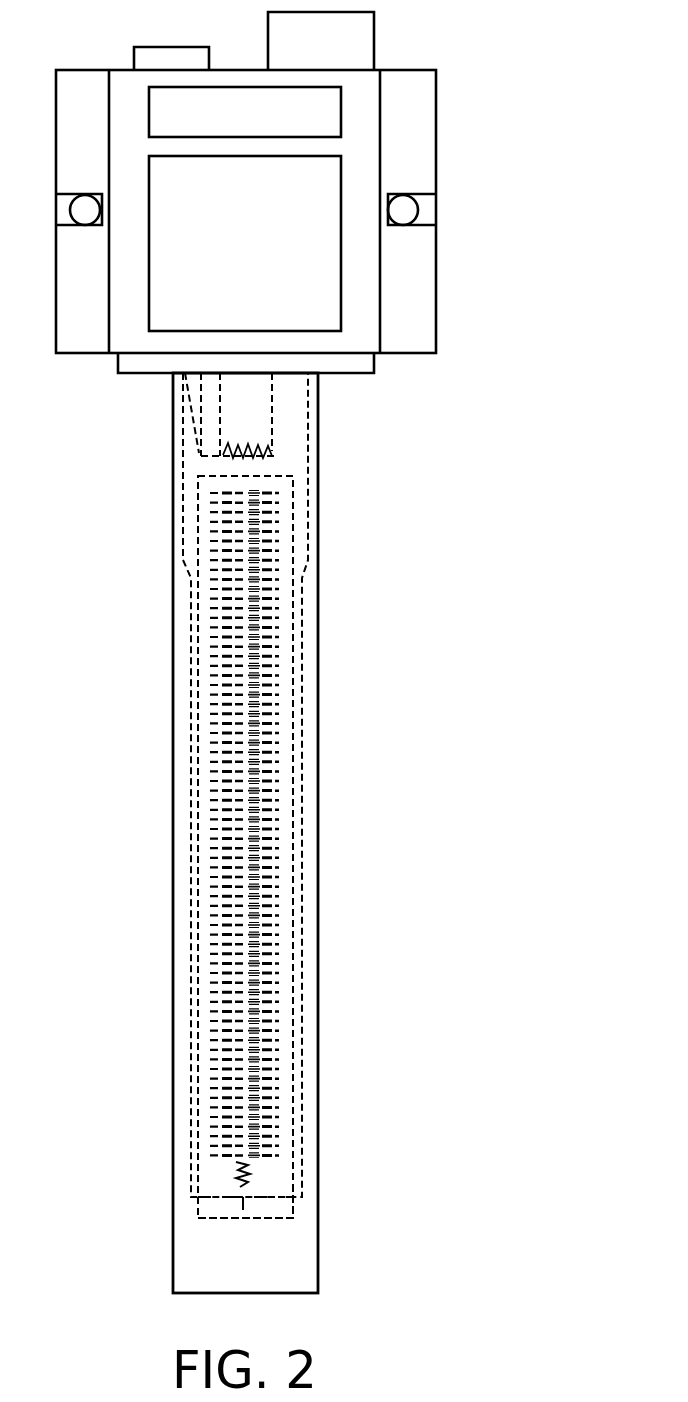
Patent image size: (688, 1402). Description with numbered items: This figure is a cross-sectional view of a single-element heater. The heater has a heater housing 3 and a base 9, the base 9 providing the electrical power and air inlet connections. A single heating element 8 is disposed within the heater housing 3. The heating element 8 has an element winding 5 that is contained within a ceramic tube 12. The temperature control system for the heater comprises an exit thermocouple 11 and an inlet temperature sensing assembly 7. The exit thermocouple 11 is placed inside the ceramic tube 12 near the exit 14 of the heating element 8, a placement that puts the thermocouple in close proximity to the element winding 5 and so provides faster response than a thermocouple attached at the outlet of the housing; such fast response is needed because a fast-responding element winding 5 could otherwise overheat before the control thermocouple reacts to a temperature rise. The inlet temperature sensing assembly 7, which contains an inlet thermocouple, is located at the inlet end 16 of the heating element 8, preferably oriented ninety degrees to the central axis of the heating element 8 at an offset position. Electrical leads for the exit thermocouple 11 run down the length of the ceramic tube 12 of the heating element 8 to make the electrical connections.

The heater housing 3 is at (318, 785).
The element winding 5 is at (277, 1025).
The inlet temperature sensing assembly 7 is at (294, 446).
The heating element 8 is at (176, 902).
The base 9 is at (436, 302).
The exit thermocouple 11 is at (243, 1202).
The ceramic tube 12 is at (198, 502).
The exit of the heater element 14 is at (273, 1220).
The inlet end of heater element 16 is at (270, 477).